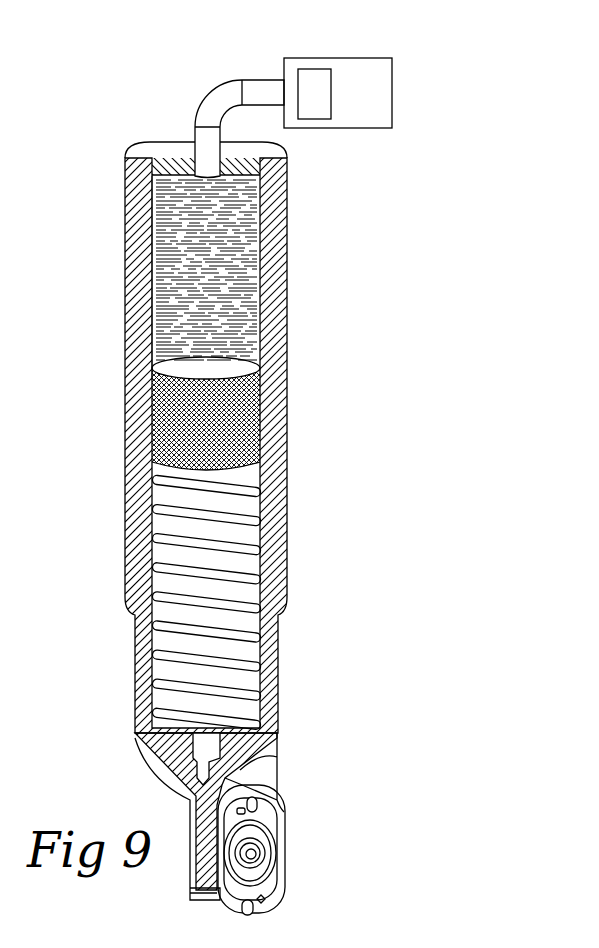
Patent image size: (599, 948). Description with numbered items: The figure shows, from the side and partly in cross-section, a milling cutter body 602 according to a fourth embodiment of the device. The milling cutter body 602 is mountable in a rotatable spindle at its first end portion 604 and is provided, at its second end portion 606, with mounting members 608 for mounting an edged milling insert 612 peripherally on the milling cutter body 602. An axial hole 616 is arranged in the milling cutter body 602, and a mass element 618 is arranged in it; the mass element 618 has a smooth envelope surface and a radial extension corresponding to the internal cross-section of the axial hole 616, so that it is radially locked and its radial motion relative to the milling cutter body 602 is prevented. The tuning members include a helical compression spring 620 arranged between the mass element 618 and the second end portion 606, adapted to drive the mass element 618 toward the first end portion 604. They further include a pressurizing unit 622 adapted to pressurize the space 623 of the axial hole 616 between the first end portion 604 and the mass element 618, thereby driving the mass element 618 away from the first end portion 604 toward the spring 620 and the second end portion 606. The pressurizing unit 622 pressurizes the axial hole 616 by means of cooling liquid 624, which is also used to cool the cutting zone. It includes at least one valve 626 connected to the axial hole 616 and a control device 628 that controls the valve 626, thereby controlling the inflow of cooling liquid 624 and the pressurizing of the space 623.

The milling cutter body 602 is at (295, 393).
The first end portion 604 is at (137, 223).
The second end portion 606 is at (172, 747).
The mounting members 608 is at (248, 860).
The edged milling insert 612 is at (263, 817).
The axial hole 616 is at (152, 204).
The mass element 618 is at (173, 420).
The helical compression spring 620 is at (160, 533).
The pressurizing unit 622 is at (377, 92).
The space 623 is at (183, 310).
The cooling liquid 624 is at (228, 253).
The valve 626 is at (237, 165).
The control device 628 is at (313, 85).